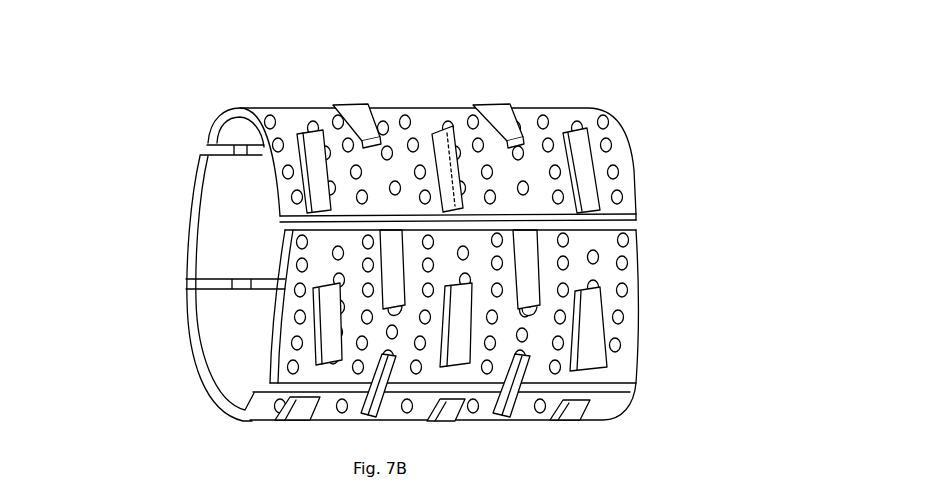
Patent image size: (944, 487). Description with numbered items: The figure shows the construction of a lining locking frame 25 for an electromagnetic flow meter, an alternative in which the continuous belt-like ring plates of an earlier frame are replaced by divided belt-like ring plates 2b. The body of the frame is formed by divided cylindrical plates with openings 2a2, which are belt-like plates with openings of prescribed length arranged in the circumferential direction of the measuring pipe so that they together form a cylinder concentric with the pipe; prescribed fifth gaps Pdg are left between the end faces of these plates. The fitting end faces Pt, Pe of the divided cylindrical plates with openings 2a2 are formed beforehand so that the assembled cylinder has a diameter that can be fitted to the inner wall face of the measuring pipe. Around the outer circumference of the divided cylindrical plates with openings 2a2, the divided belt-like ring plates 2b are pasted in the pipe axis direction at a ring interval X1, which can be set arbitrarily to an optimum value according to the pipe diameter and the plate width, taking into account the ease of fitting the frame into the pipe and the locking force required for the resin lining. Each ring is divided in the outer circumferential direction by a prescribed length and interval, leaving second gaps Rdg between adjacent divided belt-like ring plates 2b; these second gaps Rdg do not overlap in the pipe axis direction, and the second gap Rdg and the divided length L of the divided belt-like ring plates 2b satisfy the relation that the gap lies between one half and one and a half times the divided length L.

The lining locking frame 25 is at (328, 83).
The divided belt-like ring plate 2b is at (500, 104).
The divided cylindrical plate with openings 2a2 is at (190, 190).
The fifth gap Pdg is at (204, 145).
The fitting end face Pt is at (277, 220).
The fitting end face Pe is at (638, 227).
The ring interval X1 is at (423, 108).
The second gap Rdg is at (577, 302).
The divided length L is at (573, 293).